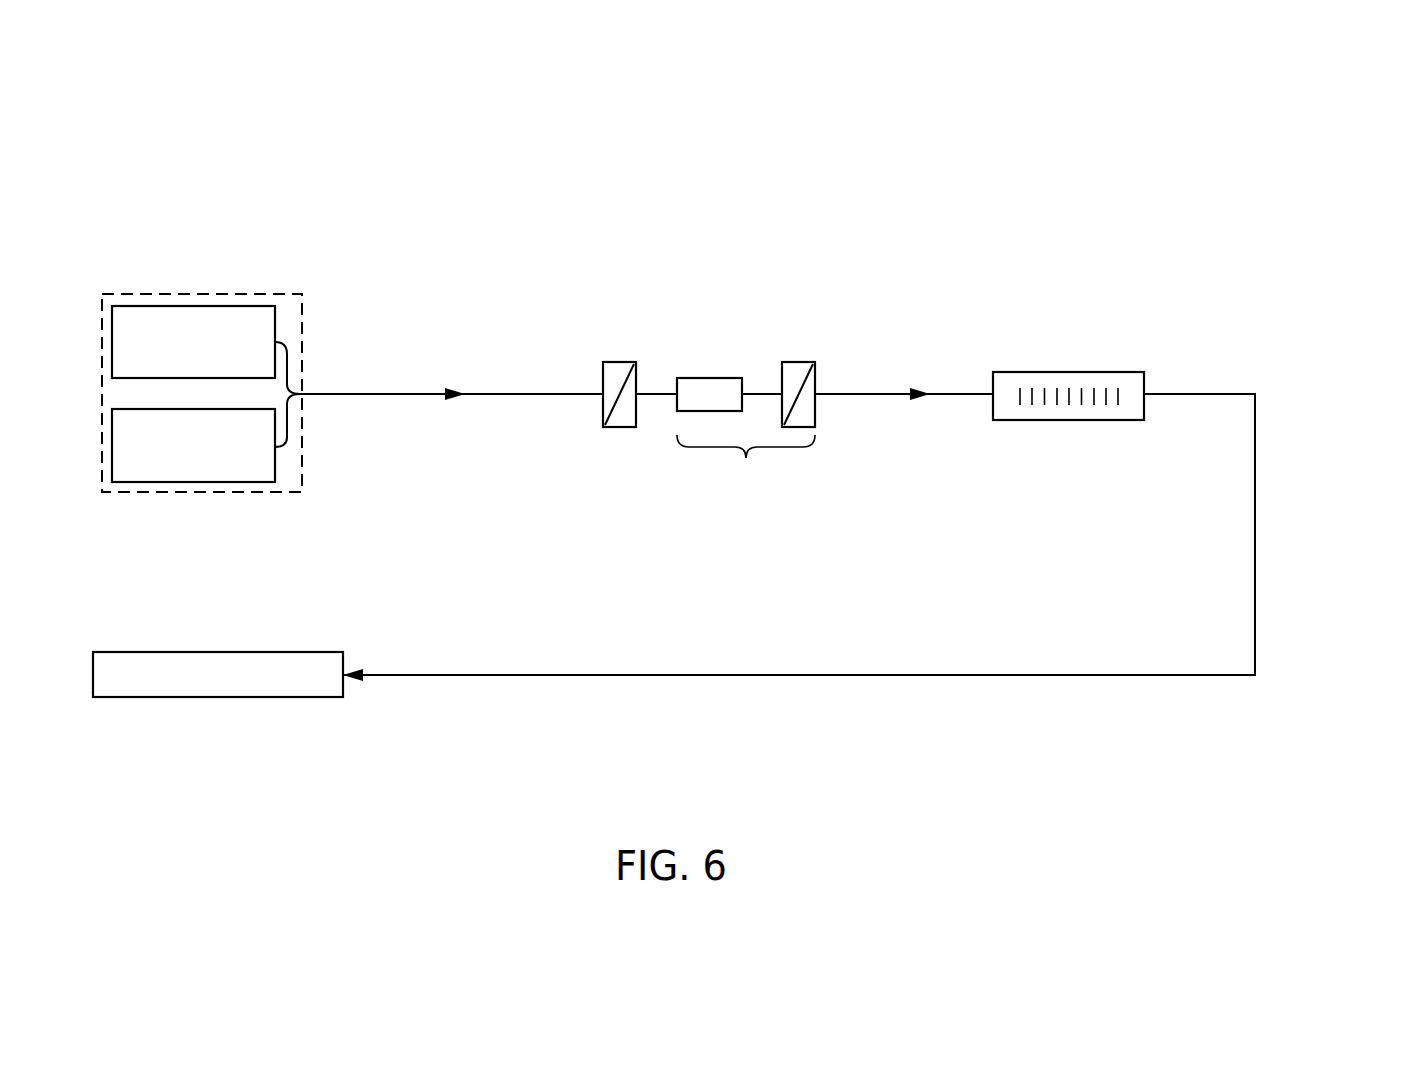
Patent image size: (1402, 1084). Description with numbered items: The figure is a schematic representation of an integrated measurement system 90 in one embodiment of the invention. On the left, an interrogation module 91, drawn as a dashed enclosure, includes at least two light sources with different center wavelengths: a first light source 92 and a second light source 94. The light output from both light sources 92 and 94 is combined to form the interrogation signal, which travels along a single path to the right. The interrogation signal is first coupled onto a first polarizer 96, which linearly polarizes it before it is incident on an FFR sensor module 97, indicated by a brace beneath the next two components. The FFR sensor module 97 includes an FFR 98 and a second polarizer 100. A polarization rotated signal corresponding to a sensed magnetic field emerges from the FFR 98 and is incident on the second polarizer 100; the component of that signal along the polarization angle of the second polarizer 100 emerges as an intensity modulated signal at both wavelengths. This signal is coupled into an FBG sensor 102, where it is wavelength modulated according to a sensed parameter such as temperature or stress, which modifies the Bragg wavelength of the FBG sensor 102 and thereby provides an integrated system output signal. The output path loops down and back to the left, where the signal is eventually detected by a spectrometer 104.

The measurement system 90 is at (1270, 148).
The interrogation module 91 is at (221, 294).
The first light source 92 is at (112, 340).
The second light source 94 is at (112, 445).
The first polarizer 96 is at (620, 362).
The FFR sensor module 97 is at (756, 394).
The FFR 98 is at (710, 378).
The second polarizer 100 is at (800, 362).
The FBG sensor 102 is at (1069, 372).
The spectrometer 104 is at (185, 652).